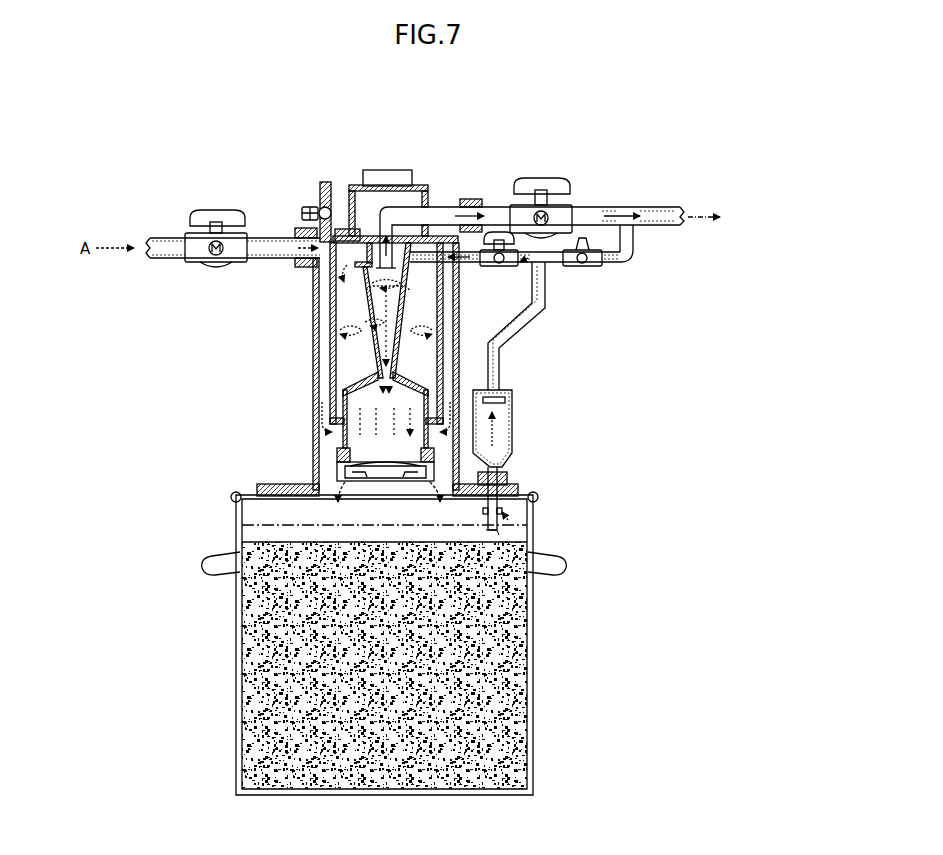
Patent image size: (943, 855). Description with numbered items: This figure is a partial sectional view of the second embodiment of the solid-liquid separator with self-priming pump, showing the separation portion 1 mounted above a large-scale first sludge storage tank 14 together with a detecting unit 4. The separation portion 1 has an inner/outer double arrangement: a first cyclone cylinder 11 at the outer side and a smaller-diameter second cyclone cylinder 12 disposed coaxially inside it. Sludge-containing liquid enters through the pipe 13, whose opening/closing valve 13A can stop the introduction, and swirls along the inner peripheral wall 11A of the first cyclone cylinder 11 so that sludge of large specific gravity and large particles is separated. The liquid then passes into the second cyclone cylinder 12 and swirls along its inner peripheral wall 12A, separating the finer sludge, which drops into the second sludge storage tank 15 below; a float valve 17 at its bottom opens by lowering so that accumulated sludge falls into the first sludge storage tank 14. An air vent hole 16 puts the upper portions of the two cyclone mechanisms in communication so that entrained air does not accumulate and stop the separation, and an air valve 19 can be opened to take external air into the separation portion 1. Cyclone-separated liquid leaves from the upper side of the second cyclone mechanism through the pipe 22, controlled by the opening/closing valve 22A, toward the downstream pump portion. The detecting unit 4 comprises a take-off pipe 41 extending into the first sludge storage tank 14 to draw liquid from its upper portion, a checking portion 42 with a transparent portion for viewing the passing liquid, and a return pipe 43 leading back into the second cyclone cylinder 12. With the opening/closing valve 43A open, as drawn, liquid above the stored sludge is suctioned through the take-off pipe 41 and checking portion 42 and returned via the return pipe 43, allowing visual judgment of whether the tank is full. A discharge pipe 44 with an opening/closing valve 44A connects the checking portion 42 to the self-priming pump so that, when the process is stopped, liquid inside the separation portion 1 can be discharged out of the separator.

The separation portion 1 is at (295, 347).
The first cyclone cylinder 11 is at (313, 400).
The inner peripheral wall 11A is at (330, 379).
The second cyclone cylinder 12 is at (378, 318).
The inner peripheral wall 12A is at (383, 305).
The pipe 13 is at (166, 240).
The opening/closing valve 13A is at (223, 218).
The first sludge storage tank 14 is at (535, 637).
The second sludge storage tank 15 is at (343, 437).
The air vent hole 16 is at (352, 233).
The float valve 17 is at (372, 473).
The air valve 19 is at (325, 198).
The pipe 22 is at (660, 213).
The opening/closing valve 22A is at (540, 180).
The detecting unit 4 is at (528, 397).
The take-off pipe 41 is at (500, 508).
The checking portion 42 is at (504, 428).
The return pipe 43 is at (528, 264).
The opening/closing valve 43A is at (490, 268).
The discharge pipe 44 is at (622, 268).
The opening/closing valve 44A is at (584, 268).